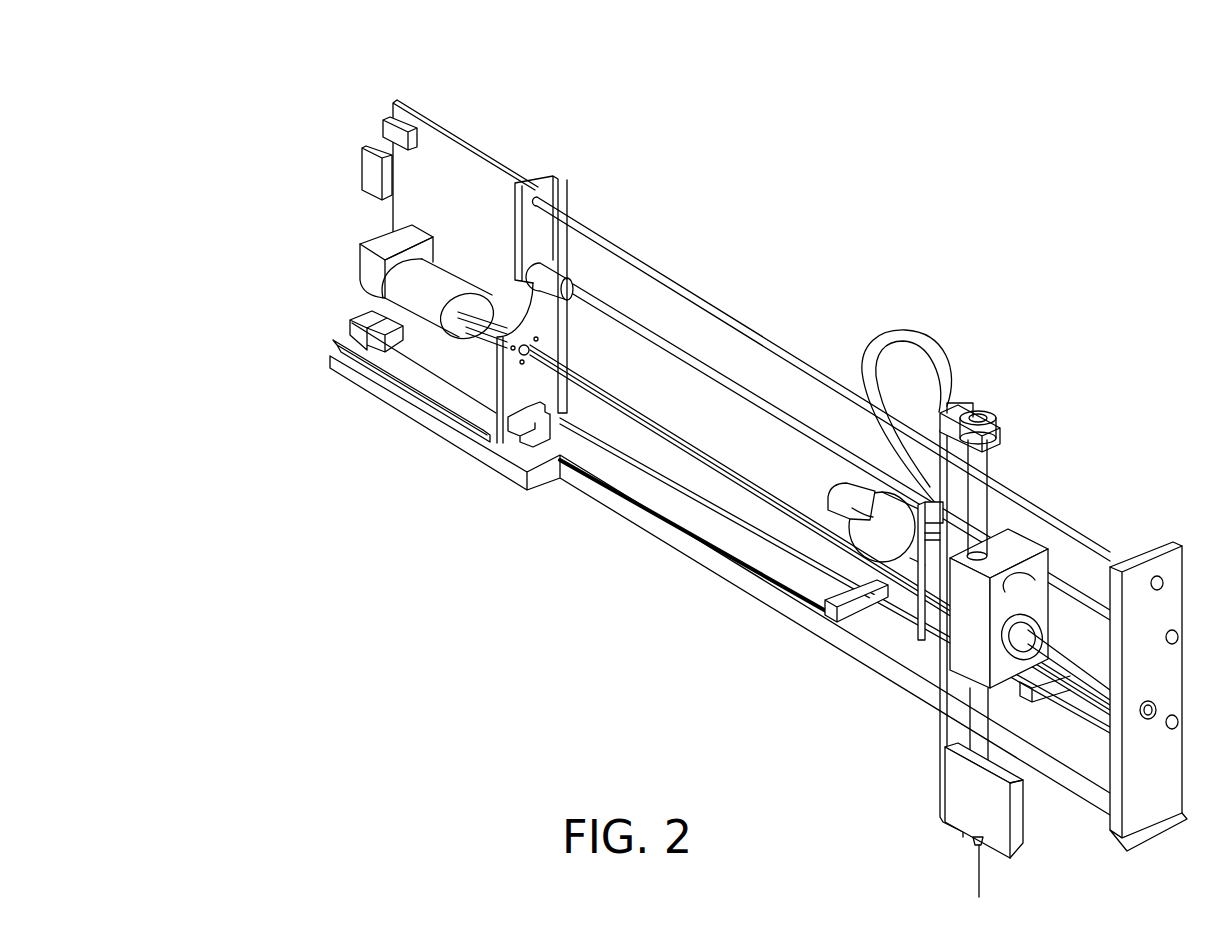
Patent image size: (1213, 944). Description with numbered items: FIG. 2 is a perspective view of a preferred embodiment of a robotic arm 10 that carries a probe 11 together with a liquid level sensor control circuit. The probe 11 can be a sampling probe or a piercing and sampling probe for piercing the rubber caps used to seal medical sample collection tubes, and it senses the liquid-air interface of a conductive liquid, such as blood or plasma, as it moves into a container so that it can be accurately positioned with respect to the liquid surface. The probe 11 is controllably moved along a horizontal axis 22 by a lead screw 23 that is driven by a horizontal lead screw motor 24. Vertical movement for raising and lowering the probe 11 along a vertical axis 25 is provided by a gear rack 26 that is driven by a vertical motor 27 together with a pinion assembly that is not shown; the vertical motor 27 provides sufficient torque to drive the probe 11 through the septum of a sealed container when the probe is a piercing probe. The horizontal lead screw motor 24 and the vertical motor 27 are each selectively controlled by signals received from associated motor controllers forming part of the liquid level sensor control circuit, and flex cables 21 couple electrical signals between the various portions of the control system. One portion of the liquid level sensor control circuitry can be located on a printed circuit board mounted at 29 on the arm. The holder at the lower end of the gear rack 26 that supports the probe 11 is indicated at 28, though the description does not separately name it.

The robotic arm 10 is at (858, 283).
The probe 11 is at (977, 872).
The flex cables 21 is at (948, 360).
The horizontal axis 22 is at (781, 667).
The lead screw 23 is at (612, 400).
The horizontal lead screw motor 24 is at (422, 287).
The vertical axis 25 is at (1057, 295).
The gear rack 26 is at (940, 763).
The vertical motor 27 is at (873, 517).
The fiber holder 28 is at (993, 810).
The printed circuit board mounting location 29 is at (486, 153).